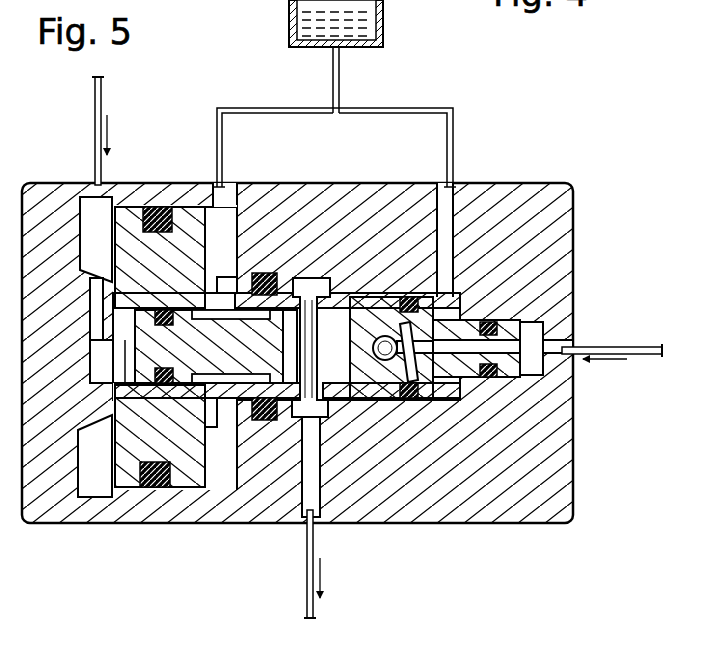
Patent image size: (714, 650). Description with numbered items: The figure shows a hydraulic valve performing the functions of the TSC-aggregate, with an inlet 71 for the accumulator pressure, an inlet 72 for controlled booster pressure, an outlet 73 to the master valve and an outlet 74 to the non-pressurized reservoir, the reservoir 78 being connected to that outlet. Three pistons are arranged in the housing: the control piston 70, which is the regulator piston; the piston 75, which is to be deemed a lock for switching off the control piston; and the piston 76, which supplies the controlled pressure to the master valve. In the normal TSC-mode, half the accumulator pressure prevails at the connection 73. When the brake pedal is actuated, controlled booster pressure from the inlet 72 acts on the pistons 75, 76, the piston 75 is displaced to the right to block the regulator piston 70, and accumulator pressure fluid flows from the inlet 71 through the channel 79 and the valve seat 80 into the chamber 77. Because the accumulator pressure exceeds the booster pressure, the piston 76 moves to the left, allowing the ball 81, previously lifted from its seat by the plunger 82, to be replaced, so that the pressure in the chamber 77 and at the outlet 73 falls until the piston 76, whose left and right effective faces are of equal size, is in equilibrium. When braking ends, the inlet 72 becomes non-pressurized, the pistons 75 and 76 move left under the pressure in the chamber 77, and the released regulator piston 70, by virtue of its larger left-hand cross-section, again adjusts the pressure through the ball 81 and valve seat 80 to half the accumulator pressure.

The control piston 70 is at (386, 375).
The inlet for the accumulator pressure 71 is at (570, 342).
The inlet for controlled booster pressure 72 is at (93, 182).
The outlet to the master valve 73 is at (304, 515).
The outlet to the non-pressurized reservoir 74 is at (334, 79).
The lock piston 75 is at (131, 467).
The piston 76 is at (246, 370).
The chamber 77 is at (345, 400).
The reservoir 78 is at (383, 15).
The channel 79 is at (467, 378).
The valve seat 80 is at (366, 312).
The ball 81 is at (384, 335).
The plunger 82 is at (312, 280).